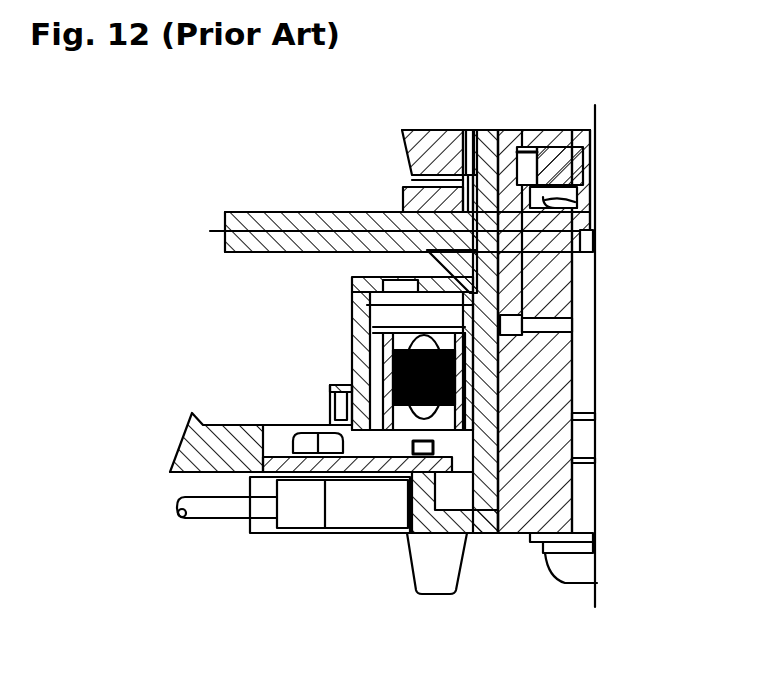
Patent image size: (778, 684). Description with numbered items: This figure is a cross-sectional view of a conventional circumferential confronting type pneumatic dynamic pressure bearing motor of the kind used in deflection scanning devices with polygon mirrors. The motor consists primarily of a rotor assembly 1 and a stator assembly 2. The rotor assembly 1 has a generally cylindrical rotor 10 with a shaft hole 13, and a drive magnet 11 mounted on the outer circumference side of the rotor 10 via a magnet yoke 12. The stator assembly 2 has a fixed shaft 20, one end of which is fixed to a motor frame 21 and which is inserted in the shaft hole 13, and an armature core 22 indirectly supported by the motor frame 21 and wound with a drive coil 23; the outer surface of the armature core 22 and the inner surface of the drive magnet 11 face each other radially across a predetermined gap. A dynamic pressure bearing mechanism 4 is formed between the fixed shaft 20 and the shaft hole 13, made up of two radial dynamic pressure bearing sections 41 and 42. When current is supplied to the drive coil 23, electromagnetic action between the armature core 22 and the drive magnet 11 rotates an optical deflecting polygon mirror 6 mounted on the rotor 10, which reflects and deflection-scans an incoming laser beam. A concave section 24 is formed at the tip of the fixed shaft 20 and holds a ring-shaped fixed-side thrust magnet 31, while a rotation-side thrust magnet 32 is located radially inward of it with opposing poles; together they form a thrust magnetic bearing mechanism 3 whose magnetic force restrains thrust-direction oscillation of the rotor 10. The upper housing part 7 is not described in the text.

The rotor assembly 1 is at (453, 330).
The stator assembly 2 is at (481, 313).
The thrust magnetic bearing mechanism 3 is at (546, 135).
The dynamic pressure bearing mechanism 4 is at (618, 306).
The optical deflecting polygon mirror 6 is at (260, 212).
The upper housing 7 is at (428, 153).
The rotor 10 is at (565, 423).
The drive magnet 11 is at (372, 397).
The magnet yoke 12 is at (327, 387).
The shaft hole 13 is at (505, 292).
The fixed shaft 20 is at (520, 470).
The motor frame 21 is at (432, 540).
The armature core 22 is at (368, 362).
The drive coil 23 is at (392, 333).
The concave section 24 is at (583, 207).
The fixed-side thrust magnet 31 is at (525, 128).
The rotation-side thrust magnet 32 is at (565, 128).
The radial dynamic pressure bearing section 41 is at (505, 266).
The radial dynamic pressure bearing section 42 is at (537, 360).